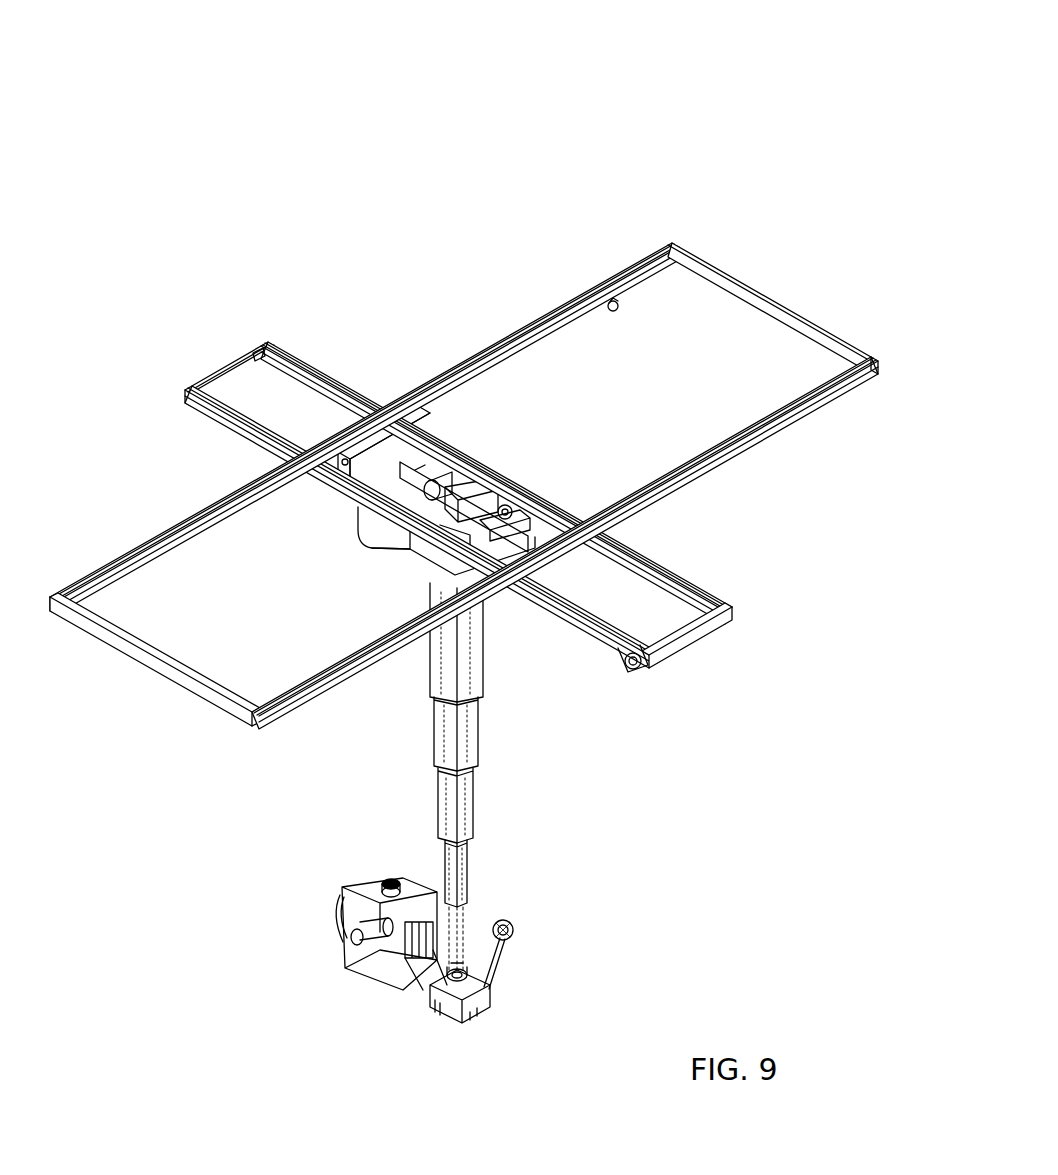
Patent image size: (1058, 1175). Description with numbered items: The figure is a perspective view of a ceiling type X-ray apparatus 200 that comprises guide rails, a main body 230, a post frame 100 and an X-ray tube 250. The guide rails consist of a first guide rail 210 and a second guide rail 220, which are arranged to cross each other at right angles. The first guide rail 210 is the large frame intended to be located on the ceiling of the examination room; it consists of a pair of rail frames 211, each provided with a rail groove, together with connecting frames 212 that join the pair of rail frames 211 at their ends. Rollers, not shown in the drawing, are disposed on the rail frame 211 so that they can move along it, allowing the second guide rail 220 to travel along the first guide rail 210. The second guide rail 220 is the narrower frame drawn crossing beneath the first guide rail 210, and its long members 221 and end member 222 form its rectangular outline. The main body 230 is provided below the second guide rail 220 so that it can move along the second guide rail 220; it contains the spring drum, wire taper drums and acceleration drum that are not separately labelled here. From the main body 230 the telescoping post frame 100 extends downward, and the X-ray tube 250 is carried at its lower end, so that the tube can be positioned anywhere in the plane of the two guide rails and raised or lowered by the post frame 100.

The post frame 100 is at (503, 748).
The ceiling type X-ray apparatus 200 is at (472, 399).
The first guide rail 210 is at (472, 467).
The rail frame 211 is at (822, 404).
The connecting frame 212 is at (707, 264).
The second guide rail 220 is at (507, 539).
The auxiliary rail 221 is at (648, 558).
The end bar 222 is at (700, 638).
The main body 230 is at (350, 556).
The X-ray tube 250 is at (407, 1012).